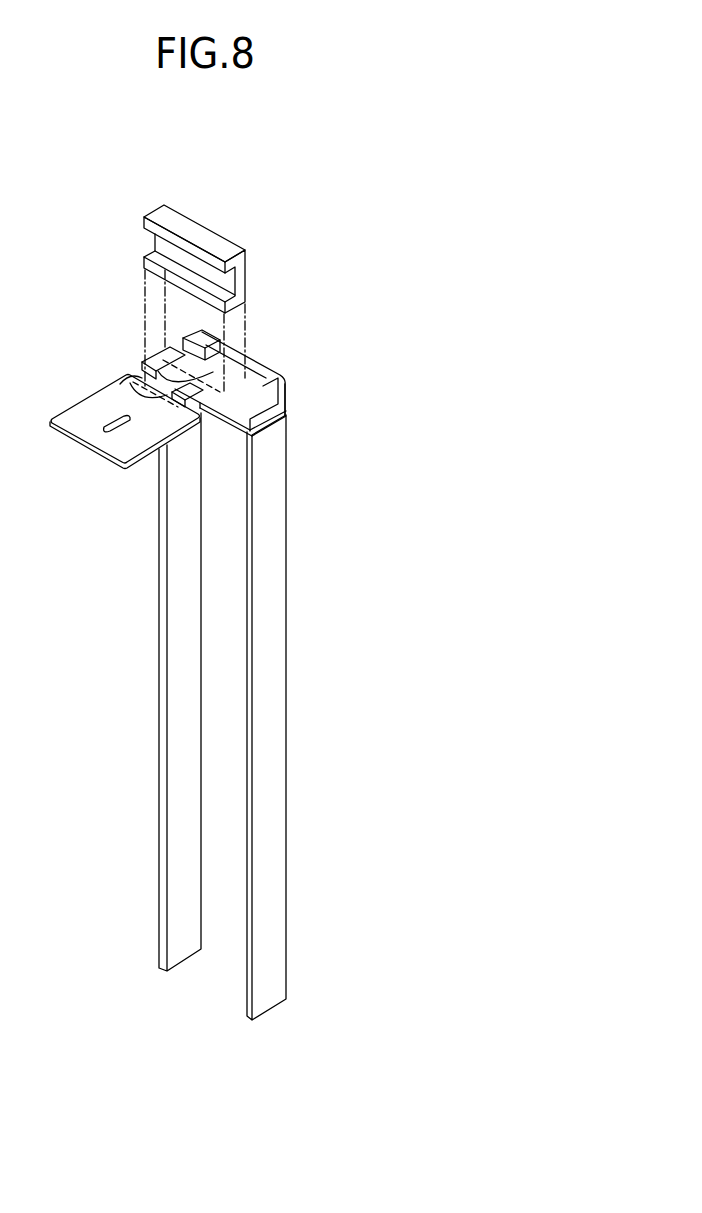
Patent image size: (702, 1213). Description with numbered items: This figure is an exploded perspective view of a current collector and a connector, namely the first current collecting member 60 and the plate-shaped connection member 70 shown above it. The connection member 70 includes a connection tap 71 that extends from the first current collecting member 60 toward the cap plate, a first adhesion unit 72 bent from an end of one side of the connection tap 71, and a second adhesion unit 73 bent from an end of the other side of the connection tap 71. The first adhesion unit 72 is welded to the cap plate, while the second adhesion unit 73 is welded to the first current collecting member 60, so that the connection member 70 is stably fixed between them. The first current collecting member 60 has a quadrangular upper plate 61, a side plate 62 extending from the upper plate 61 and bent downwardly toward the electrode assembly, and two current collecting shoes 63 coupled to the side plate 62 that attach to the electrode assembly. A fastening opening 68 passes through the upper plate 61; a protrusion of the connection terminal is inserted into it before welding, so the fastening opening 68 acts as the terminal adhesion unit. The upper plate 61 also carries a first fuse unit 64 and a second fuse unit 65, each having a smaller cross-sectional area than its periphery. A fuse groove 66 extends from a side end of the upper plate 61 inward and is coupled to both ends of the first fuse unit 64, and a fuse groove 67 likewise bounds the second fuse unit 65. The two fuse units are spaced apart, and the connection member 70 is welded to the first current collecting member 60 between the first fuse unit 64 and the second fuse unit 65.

The first current collecting member 60 is at (215, 649).
The upper plate 61 is at (106, 417).
The side plate 62 is at (268, 399).
The current collecting shoes 63 is at (181, 618).
The first fuse unit 64 is at (157, 402).
The second fuse unit 65 is at (186, 361).
The fuse groove 66 is at (124, 384).
The fuse groove 67 is at (172, 350).
The fastening opening 68 is at (102, 424).
The connection member 70 is at (195, 229).
The connection tap 71 is at (223, 280).
The first adhesion unit 72 is at (180, 240).
The second adhesion unit 73 is at (162, 278).